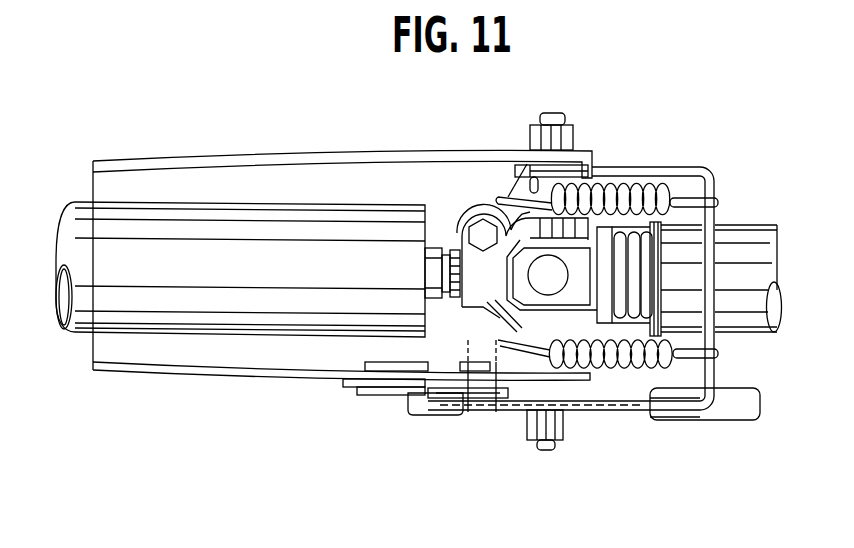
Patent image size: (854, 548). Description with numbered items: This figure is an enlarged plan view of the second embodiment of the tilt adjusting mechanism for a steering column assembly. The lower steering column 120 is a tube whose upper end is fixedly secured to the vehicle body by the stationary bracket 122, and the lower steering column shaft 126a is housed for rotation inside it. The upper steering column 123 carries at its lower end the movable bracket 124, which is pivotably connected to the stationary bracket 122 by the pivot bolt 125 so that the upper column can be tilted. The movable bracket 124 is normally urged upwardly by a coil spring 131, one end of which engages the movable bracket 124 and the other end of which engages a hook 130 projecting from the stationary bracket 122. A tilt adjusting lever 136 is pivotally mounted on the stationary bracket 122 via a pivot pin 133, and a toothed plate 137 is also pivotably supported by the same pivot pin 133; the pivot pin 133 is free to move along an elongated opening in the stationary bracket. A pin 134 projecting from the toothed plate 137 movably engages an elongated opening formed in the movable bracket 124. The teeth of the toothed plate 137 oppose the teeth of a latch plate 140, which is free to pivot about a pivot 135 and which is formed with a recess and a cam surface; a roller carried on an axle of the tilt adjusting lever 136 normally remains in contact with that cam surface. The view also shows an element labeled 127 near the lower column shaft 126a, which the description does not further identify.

The lower steering column 120 is at (78, 335).
The stationary bracket 122 is at (160, 374).
The upper steering column 123 is at (745, 232).
The movable bracket 124 is at (583, 410).
The pivot bolt 125 is at (556, 112).
The lower steering column shaft 126a is at (440, 250).
The pivot block 127 is at (468, 212).
The hook 130 is at (495, 183).
The coil spring 131 is at (684, 198).
The pivot pin 133 is at (432, 416).
The pin 134 is at (472, 363).
The pivot 135 is at (376, 362).
The tilt adjusting lever 136 is at (736, 420).
The toothed plate 137 is at (500, 398).
The latch plate 140 is at (345, 392).